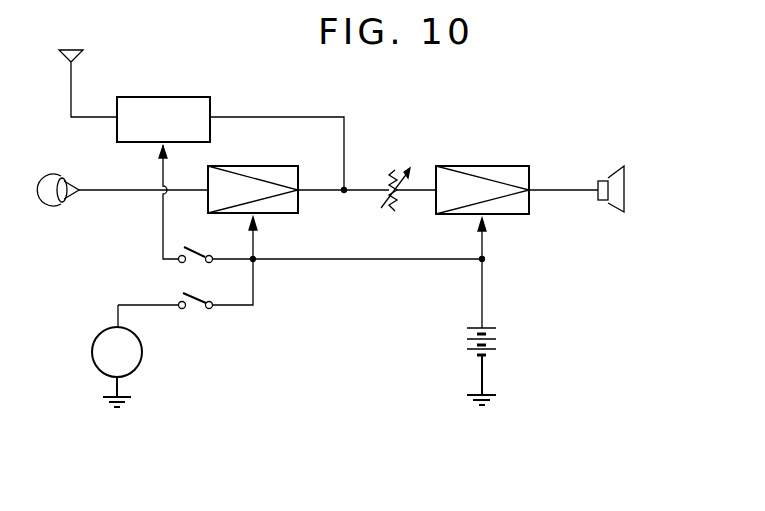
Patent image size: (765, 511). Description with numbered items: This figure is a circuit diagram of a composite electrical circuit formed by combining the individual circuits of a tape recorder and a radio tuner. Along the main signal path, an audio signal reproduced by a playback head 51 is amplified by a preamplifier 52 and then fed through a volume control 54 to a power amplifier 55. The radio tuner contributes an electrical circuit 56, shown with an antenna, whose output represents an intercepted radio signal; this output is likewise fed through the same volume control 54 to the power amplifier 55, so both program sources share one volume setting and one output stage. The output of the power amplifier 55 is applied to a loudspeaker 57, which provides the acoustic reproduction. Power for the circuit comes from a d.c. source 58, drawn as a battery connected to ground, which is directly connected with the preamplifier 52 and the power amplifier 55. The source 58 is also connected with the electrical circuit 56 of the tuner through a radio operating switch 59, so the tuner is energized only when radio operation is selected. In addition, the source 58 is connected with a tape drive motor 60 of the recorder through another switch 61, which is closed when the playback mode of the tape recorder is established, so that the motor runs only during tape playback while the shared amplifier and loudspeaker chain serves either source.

The playback head 51 is at (69, 178).
The preamplifier 52 is at (293, 176).
The volume control 54 is at (388, 182).
The power amplifier 55 is at (520, 175).
The electrical circuit 56 is at (163, 100).
The loudspeaker 57 is at (608, 179).
The d.c. source 58 is at (489, 341).
The radio operating switch 59 is at (200, 252).
The tape drive motor 60 is at (108, 330).
The switch 61 is at (193, 307).